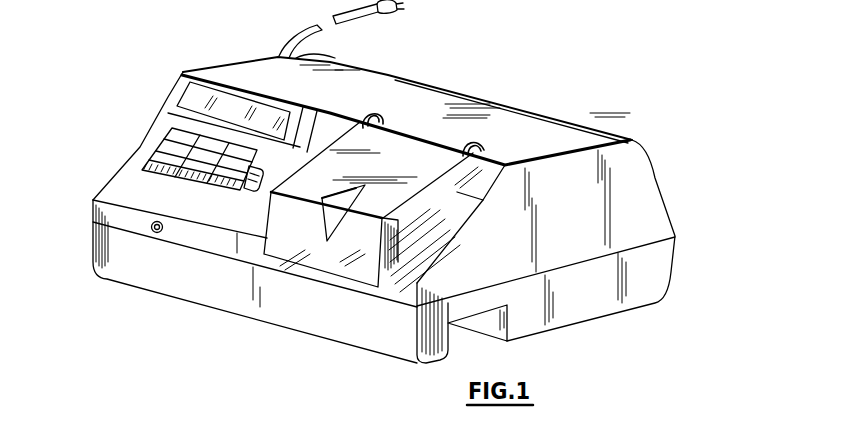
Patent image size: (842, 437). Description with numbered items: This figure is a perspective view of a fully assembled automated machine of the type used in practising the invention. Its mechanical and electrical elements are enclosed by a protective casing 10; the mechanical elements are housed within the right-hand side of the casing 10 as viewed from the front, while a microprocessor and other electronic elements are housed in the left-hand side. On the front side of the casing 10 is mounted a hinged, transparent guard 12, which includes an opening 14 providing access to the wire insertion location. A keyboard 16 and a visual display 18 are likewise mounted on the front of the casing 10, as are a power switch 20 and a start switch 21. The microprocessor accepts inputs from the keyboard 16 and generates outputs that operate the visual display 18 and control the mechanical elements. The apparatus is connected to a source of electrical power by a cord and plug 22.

The protective casing 10 is at (655, 187).
The hinged transparent guard 12 is at (385, 137).
The opening 14 is at (348, 182).
The keyboard 16 is at (158, 157).
The visual display 18 is at (191, 103).
The power switch 20 is at (240, 193).
The start switch 21 is at (163, 232).
The cord and plug 22 is at (378, 14).